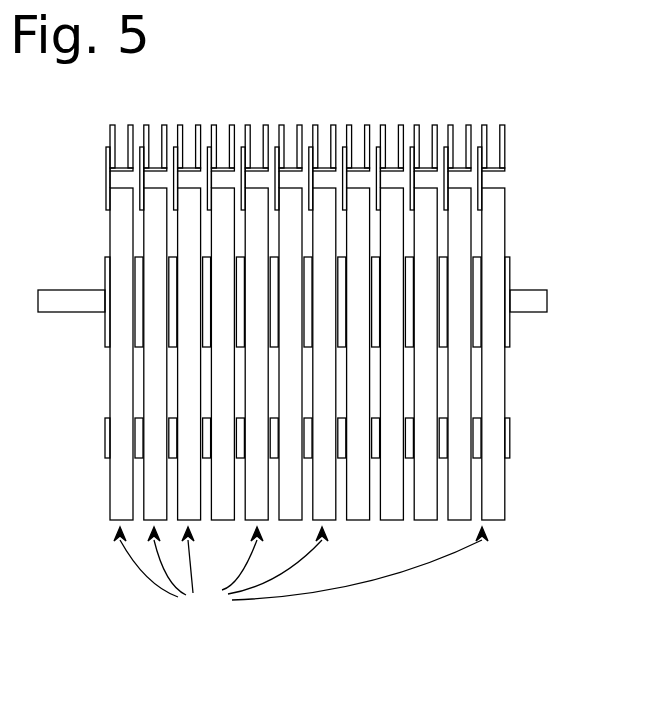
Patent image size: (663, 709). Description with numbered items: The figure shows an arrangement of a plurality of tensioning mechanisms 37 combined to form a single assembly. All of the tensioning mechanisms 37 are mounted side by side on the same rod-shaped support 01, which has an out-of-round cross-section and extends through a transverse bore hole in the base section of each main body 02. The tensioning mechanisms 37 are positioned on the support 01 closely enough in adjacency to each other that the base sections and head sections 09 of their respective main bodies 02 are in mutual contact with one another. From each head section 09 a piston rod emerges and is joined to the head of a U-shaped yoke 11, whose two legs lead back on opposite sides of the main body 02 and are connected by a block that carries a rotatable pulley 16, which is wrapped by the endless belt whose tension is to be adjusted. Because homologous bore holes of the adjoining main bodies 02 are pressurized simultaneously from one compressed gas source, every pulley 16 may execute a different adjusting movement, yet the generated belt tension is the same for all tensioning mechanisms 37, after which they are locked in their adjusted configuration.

The support 01 is at (88, 303).
The main body 02 is at (478, 322).
The head section 09 is at (478, 452).
The U-shaped yoke 11 is at (157, 510).
The pulley 16 is at (495, 148).
The tensioning mechanism 37 is at (301, 575).